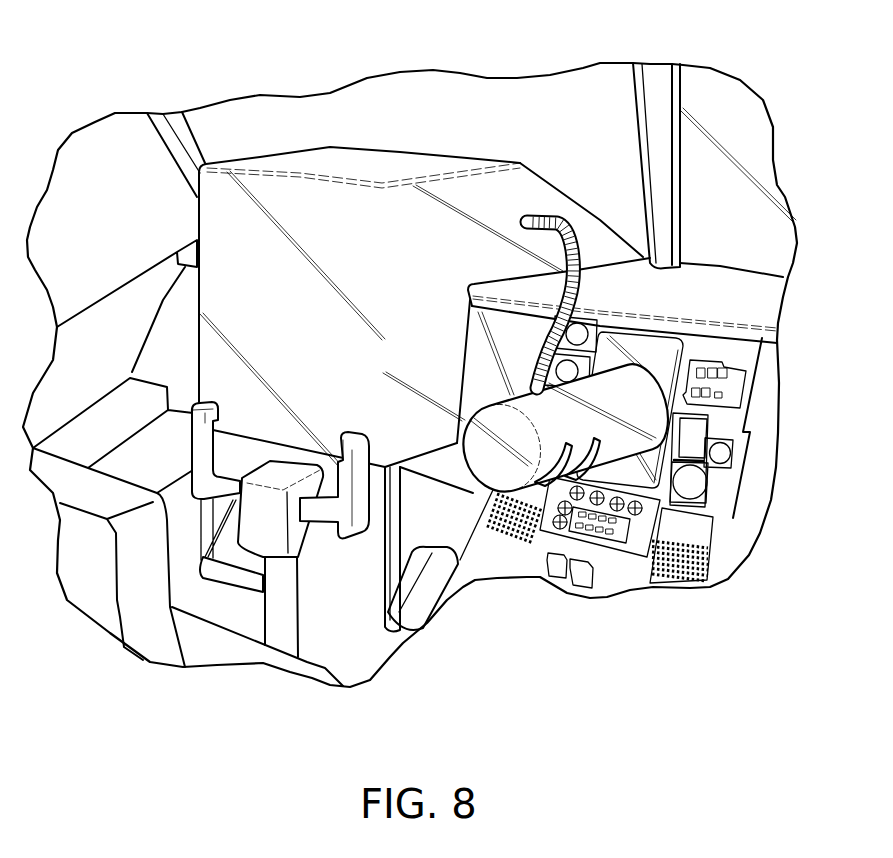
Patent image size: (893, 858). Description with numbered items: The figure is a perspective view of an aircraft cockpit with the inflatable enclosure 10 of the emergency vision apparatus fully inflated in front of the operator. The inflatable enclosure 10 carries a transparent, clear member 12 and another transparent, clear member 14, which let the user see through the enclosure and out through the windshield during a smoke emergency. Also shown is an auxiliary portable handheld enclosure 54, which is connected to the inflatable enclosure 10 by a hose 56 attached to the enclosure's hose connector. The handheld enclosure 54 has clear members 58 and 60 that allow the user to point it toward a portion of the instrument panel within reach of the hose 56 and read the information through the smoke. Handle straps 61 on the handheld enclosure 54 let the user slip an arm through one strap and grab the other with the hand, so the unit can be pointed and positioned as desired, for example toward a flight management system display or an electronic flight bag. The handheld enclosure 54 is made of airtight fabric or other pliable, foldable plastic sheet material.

The inflatable enclosure 10 is at (388, 149).
The transparent, clear member 12 is at (563, 194).
The transparent, clear member 14 is at (305, 334).
The handheld enclosure 54 is at (610, 450).
The hose 56 is at (577, 274).
The clear member 58 is at (490, 530).
The clear member 60 is at (640, 410).
The handle straps 61 is at (521, 491).